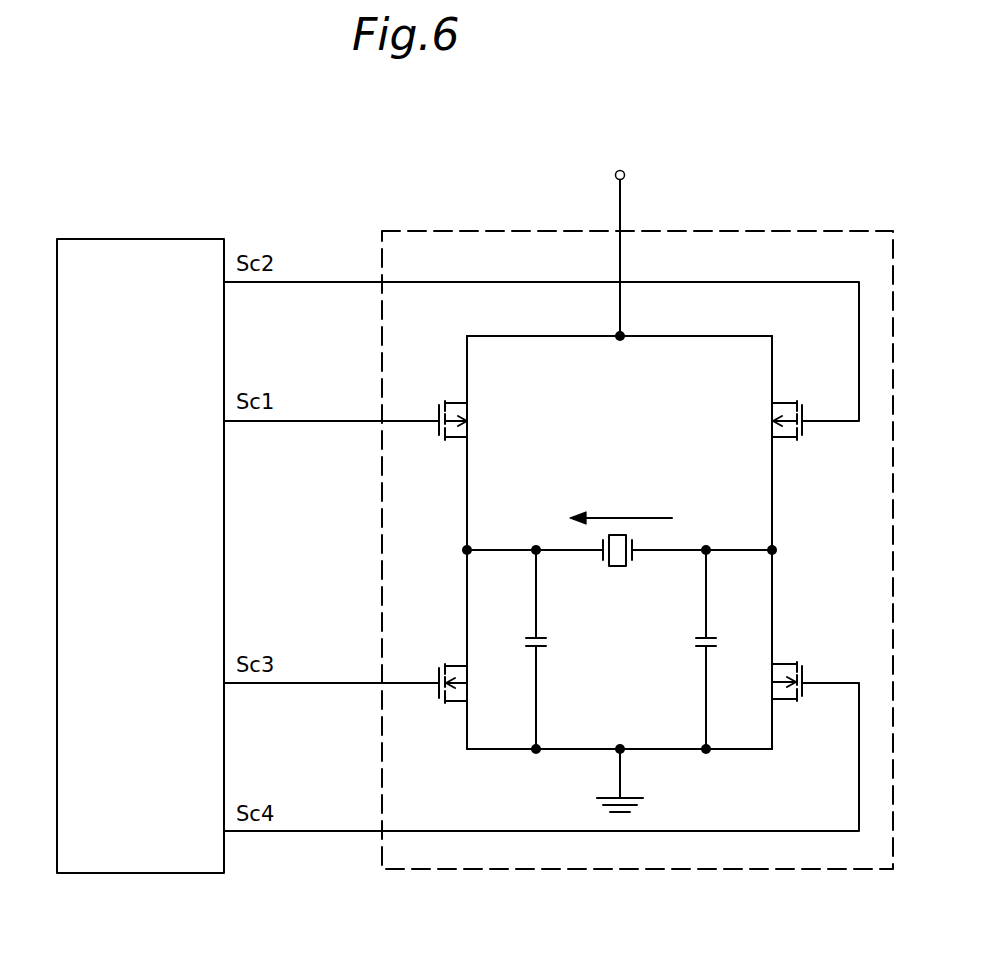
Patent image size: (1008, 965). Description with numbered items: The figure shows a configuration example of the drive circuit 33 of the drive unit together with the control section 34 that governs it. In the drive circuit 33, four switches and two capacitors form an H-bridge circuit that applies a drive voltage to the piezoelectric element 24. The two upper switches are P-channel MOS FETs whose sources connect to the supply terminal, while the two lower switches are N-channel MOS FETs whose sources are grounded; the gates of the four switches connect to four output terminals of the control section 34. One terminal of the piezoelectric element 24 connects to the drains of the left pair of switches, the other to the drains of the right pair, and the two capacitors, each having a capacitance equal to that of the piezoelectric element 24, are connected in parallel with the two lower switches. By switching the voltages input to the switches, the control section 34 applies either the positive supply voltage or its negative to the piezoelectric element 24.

The piezoelectric element 24 is at (616, 567).
The drive circuit 33 is at (437, 234).
The control section 34 is at (182, 238).